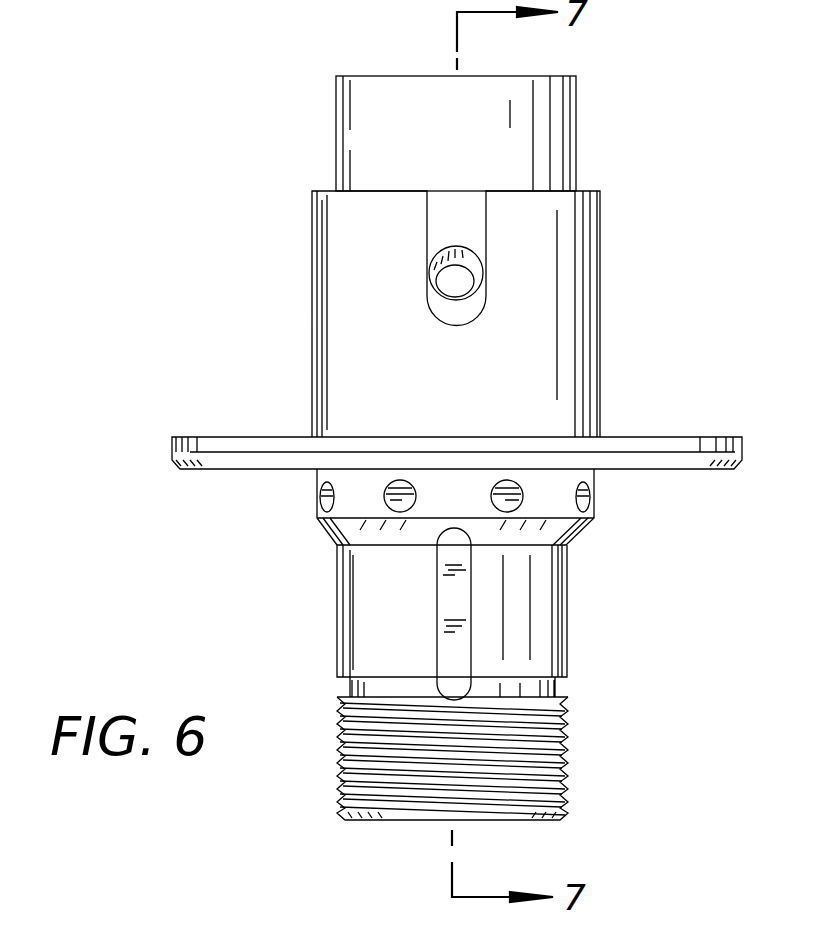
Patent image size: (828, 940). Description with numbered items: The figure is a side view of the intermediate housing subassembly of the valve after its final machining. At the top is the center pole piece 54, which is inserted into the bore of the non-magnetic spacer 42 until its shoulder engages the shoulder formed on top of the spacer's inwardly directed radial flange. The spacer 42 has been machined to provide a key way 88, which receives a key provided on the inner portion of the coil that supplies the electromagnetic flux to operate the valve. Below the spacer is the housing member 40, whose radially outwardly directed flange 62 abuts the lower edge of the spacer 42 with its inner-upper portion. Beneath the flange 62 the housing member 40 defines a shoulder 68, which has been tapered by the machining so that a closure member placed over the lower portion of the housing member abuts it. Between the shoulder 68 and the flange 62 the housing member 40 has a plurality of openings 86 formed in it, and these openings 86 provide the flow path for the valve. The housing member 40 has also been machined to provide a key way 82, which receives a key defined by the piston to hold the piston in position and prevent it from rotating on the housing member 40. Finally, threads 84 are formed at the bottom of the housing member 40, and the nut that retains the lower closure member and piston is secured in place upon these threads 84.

The center pole piece 54 is at (360, 132).
The key way 88 is at (488, 211).
The spacer 42 is at (600, 287).
The flange 62 is at (172, 443).
The shoulder 68 is at (585, 528).
The openings 86 is at (393, 500).
The housing member 40 is at (567, 627).
The key way 82 is at (450, 598).
The threads 84 is at (452, 698).